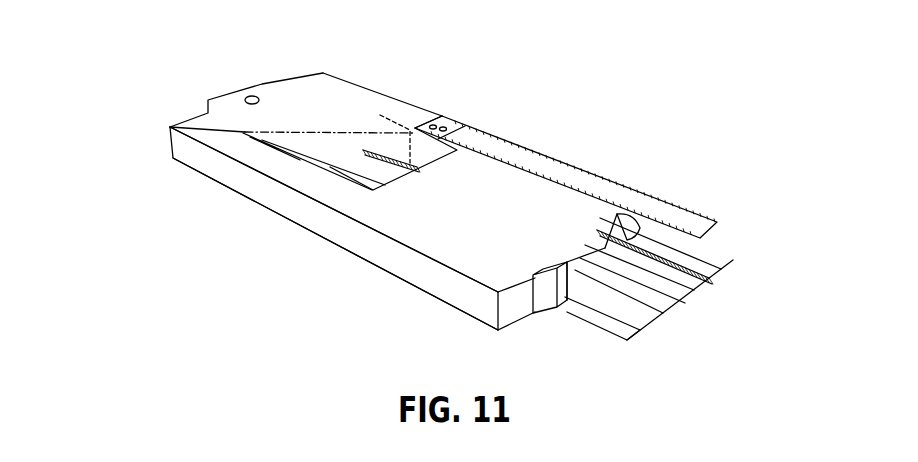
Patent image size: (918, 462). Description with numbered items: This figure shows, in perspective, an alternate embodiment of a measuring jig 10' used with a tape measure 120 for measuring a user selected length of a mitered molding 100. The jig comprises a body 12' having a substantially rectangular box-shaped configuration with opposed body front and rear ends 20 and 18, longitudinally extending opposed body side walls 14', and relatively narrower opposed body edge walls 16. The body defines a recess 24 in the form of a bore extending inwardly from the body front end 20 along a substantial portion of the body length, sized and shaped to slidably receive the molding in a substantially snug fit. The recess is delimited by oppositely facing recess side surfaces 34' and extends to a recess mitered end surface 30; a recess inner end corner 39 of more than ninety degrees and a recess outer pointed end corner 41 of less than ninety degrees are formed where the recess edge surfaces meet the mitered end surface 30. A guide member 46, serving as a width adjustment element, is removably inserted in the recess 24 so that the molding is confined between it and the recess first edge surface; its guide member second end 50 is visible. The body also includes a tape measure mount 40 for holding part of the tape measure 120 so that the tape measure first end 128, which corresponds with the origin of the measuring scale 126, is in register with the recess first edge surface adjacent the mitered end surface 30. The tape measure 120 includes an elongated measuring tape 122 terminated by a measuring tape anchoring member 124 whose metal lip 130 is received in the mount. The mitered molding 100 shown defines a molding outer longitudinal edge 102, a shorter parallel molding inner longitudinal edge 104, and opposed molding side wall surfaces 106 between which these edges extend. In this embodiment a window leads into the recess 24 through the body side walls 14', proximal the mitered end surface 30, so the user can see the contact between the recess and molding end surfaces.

The measuring jig 10' is at (125, 318).
The body 12' is at (311, 244).
The body side wall 14' is at (387, 219).
The body edge wall 16 is at (447, 287).
The body rear end 18 is at (232, 90).
The body front end 20 is at (510, 305).
The recess 24 is at (610, 223).
The recess mitered end surface 30 is at (337, 137).
The recess side surface 34' is at (583, 310).
The recess inner end corner 39 is at (413, 143).
The tape measure mount 40 is at (410, 107).
The recess outer pointed end corner 41 is at (247, 132).
The guide member 46 is at (547, 302).
The guide member second end 50 is at (330, 175).
The mitered molding 100 is at (700, 273).
The molding outer longitudinal edge 102 is at (623, 318).
The molding inner longitudinal edge 104 is at (703, 237).
The molding side wall surface 106 is at (632, 262).
The tape measure 120 is at (590, 170).
The measuring tape 122 is at (547, 170).
The measuring tape anchoring member 124 is at (452, 123).
The measuring scale 126 is at (503, 140).
The tape measure first end 128 is at (443, 127).
The metal lip 130 is at (418, 128).